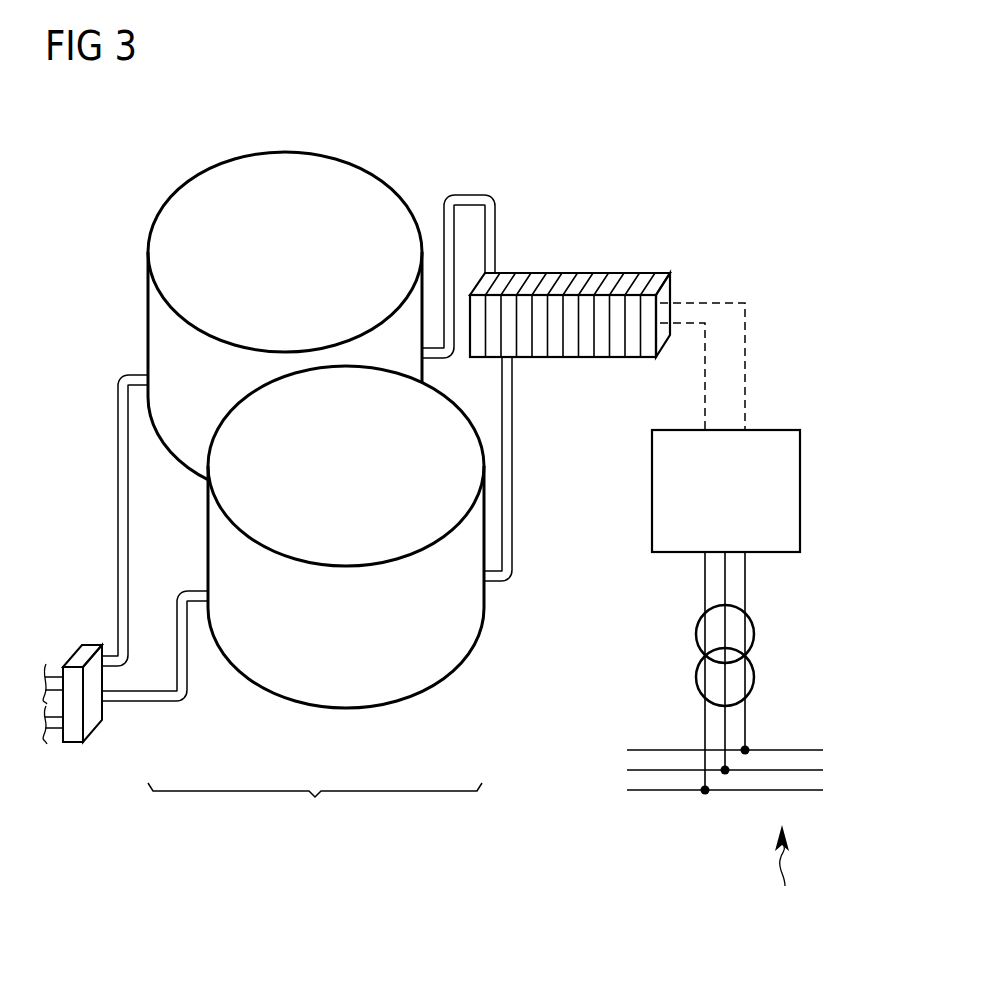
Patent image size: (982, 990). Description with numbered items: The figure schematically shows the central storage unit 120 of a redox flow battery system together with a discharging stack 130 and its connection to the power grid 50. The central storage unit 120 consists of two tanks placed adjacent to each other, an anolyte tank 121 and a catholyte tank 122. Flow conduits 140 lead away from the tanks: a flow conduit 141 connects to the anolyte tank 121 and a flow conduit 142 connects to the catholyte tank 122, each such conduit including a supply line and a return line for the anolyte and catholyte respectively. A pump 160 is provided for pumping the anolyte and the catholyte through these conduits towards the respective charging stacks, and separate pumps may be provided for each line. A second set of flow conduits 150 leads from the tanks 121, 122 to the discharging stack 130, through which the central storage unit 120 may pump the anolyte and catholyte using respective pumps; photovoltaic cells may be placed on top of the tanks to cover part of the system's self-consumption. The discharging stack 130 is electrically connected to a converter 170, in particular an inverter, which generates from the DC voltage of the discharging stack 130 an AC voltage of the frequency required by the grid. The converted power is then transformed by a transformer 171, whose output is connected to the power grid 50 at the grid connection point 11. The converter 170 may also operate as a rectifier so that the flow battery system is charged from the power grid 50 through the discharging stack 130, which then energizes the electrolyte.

The grid connection point 11 is at (688, 792).
The power grid 50 is at (788, 875).
The central storage unit 120 is at (315, 812).
The anolyte tank 121 is at (168, 198).
The catholyte tank 122 is at (453, 661).
The discharging stack 130 is at (579, 280).
The flow conduits 140 is at (154, 560).
The flow conduit 141 is at (119, 439).
The flow conduit 142 is at (183, 688).
The second set of flow conduits 150 is at (447, 354).
The pump 160 is at (80, 658).
The converter 170 is at (800, 490).
The transformer 171 is at (755, 625).